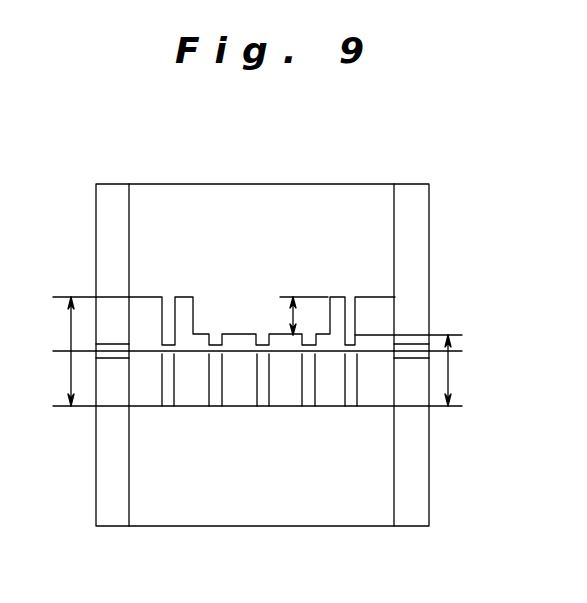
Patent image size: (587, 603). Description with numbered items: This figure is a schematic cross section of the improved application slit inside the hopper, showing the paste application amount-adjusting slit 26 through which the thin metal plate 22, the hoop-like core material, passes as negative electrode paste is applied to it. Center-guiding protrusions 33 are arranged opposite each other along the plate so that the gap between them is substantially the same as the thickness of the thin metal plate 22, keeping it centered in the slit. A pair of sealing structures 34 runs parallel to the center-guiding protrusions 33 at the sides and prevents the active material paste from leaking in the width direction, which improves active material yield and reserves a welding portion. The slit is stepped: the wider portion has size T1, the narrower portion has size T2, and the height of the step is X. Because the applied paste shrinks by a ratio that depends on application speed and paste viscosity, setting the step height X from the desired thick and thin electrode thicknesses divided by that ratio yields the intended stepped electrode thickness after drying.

The paste application amount-adjusting slit 26 is at (429, 242).
The sealing structure 34 is at (429, 472).
The thin metal plate 22 is at (457, 351).
The center-guiding protrusion 33 is at (243, 337).
The height of the slit X is at (295, 315).
The size of the wider portion of the slit T1 is at (55, 351).
The size of the narrower portion of the slit T2 is at (464, 370).